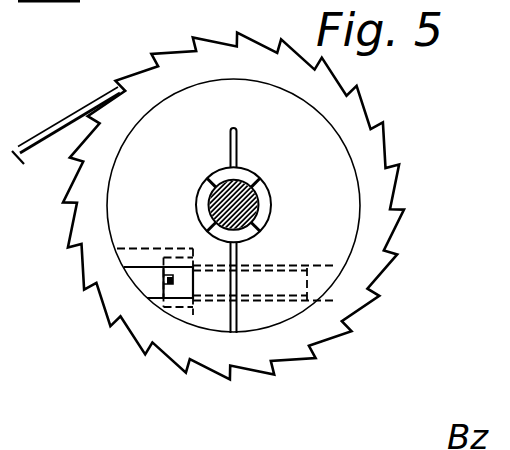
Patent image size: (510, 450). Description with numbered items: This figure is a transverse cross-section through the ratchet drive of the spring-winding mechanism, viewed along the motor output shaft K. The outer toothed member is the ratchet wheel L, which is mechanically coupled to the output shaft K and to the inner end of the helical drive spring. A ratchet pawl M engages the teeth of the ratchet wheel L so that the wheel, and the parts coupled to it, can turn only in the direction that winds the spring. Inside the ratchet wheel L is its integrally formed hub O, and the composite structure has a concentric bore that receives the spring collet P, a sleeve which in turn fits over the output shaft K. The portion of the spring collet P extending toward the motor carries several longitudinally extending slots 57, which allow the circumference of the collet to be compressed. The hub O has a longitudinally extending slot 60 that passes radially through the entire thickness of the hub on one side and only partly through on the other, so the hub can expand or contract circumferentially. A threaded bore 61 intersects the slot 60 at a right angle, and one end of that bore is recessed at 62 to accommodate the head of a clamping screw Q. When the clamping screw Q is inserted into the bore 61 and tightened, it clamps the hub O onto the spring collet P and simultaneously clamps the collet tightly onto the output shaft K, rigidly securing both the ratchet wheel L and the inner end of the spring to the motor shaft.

The ratchet wheel L is at (368, 147).
The hub O is at (343, 193).
The spring collet P is at (264, 221).
The output shaft K is at (250, 201).
The longitudinally extending slots 57 is at (254, 178).
The longitudinally extending slot 60 is at (237, 157).
The threaded bore 61 is at (337, 265).
The recess 62 is at (141, 248).
The clamping screw Q is at (166, 278).
The ratchet pawl M is at (61, 125).